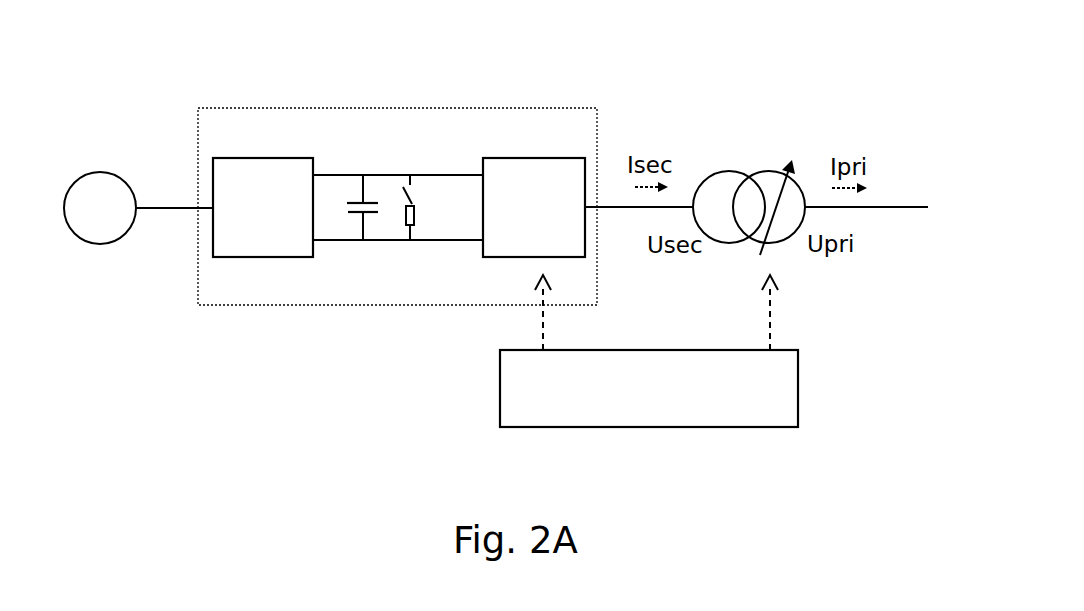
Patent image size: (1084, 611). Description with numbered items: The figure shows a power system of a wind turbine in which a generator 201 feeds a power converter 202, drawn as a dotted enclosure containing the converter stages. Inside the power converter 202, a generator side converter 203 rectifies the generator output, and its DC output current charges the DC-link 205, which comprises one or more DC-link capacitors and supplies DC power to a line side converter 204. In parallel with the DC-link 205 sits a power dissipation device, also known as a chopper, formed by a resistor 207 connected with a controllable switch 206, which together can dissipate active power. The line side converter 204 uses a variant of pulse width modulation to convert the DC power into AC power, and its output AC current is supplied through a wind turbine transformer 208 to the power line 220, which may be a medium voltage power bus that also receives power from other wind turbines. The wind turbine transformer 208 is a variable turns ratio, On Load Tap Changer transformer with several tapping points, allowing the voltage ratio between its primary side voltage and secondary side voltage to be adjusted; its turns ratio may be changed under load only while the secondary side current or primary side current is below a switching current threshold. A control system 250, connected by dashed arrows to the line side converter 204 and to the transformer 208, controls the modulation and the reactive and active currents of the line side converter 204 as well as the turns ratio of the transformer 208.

The generator 201 is at (88, 172).
The power converter 202 is at (400, 92).
The generator side converter 203 is at (258, 147).
The line side converter 204 is at (533, 147).
The DC-link 205 is at (355, 187).
The controllable switch 206 is at (412, 192).
The resistor 207 is at (414, 216).
The wind turbine transformer 208 is at (742, 172).
The power line 220 is at (905, 198).
The control system 250 is at (597, 432).